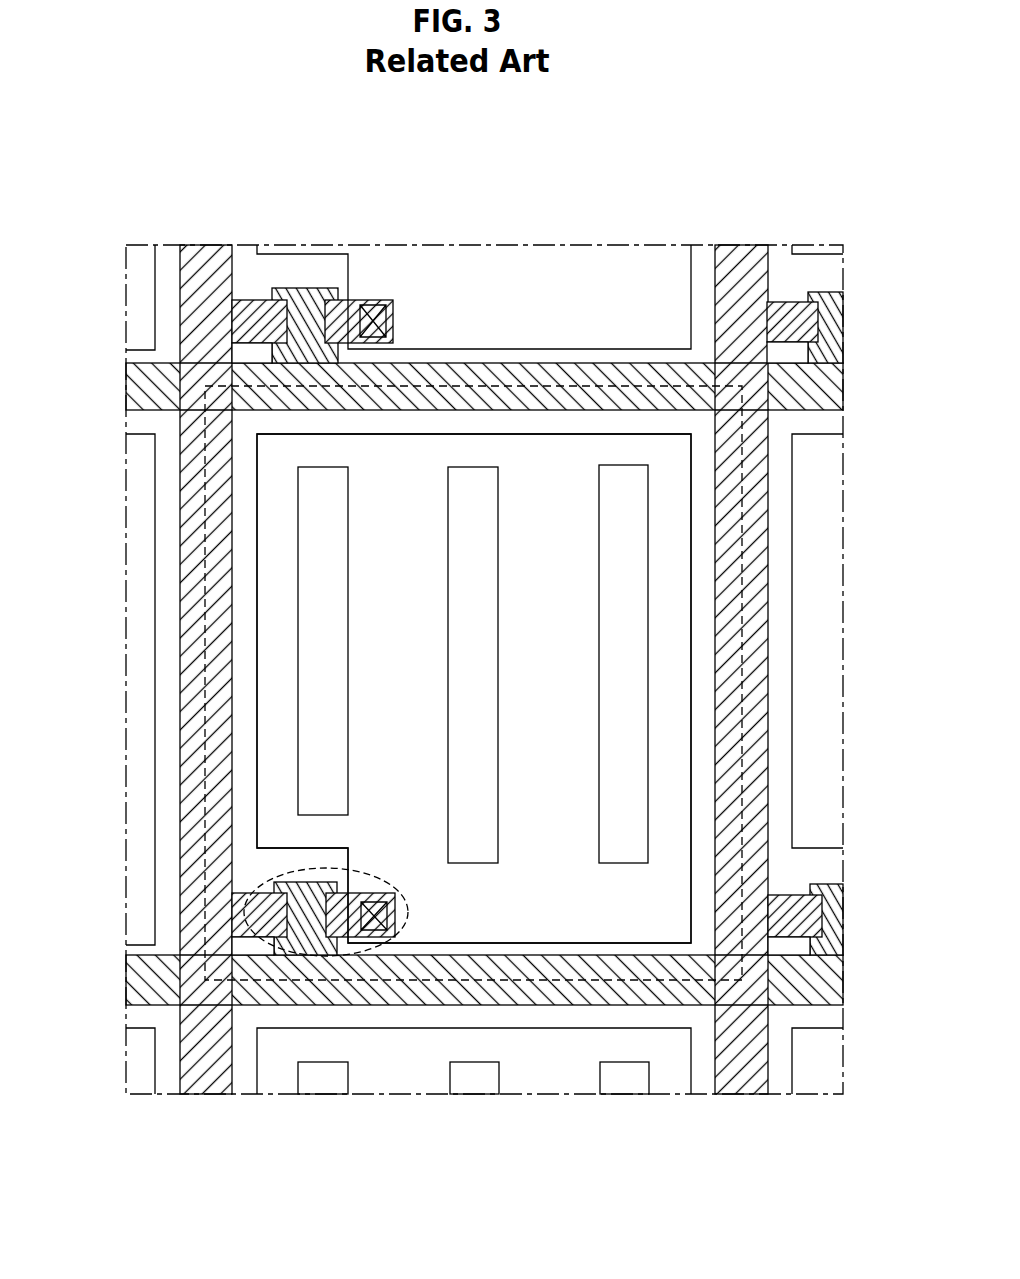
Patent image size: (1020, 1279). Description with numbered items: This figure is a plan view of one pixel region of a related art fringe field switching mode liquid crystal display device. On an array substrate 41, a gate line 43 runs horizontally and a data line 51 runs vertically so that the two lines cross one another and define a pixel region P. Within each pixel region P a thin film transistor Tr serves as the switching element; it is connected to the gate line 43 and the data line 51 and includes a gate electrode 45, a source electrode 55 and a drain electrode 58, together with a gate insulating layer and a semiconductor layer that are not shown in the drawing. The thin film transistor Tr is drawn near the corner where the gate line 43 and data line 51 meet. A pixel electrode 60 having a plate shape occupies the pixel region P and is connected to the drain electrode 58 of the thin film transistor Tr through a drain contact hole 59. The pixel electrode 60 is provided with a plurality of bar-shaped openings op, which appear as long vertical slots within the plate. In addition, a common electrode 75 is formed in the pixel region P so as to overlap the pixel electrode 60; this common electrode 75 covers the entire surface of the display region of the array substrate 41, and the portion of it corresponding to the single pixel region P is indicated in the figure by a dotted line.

The array substrate 41 is at (733, 198).
The gate line 43 is at (535, 990).
The gate electrode 45 is at (307, 933).
The data line 51 is at (190, 558).
The source electrode 55 is at (262, 937).
The drain electrode 58 is at (337, 937).
The drain contact hole 59 is at (388, 912).
The pixel electrode 60 is at (257, 510).
The common electrode 75 is at (557, 380).
The openings op is at (322, 618).
The pixel region P is at (558, 571).
The thin film transistor Tr is at (372, 946).